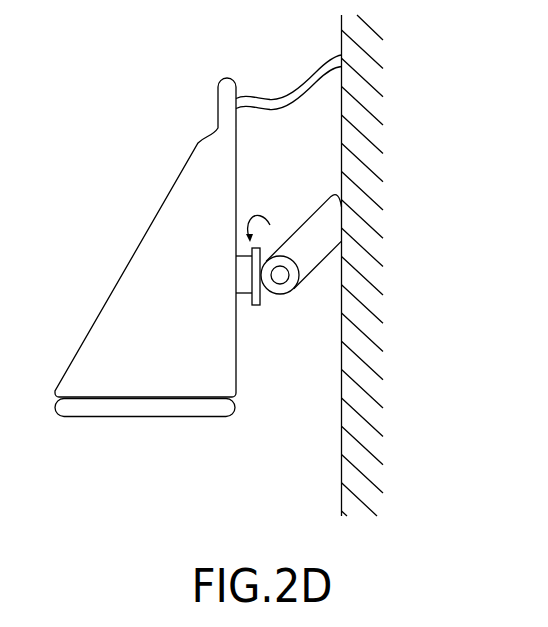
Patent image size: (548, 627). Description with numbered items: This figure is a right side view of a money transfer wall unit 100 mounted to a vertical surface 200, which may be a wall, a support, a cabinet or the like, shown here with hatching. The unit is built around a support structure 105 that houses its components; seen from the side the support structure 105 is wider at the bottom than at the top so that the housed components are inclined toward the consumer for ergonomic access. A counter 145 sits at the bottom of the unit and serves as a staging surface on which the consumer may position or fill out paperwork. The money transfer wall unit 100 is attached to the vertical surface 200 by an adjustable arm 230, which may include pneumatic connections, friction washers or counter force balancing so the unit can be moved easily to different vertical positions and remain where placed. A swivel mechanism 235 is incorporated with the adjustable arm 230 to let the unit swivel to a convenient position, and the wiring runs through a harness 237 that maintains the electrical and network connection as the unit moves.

The money transfer wall unit 100 is at (106, 212).
The support structure 105 is at (151, 322).
The counter 145 is at (106, 405).
The vertical surface 200 is at (362, 172).
The adjustable arm 230 is at (310, 230).
The swivel mechanism 235 is at (255, 305).
The harness 237 is at (270, 98).